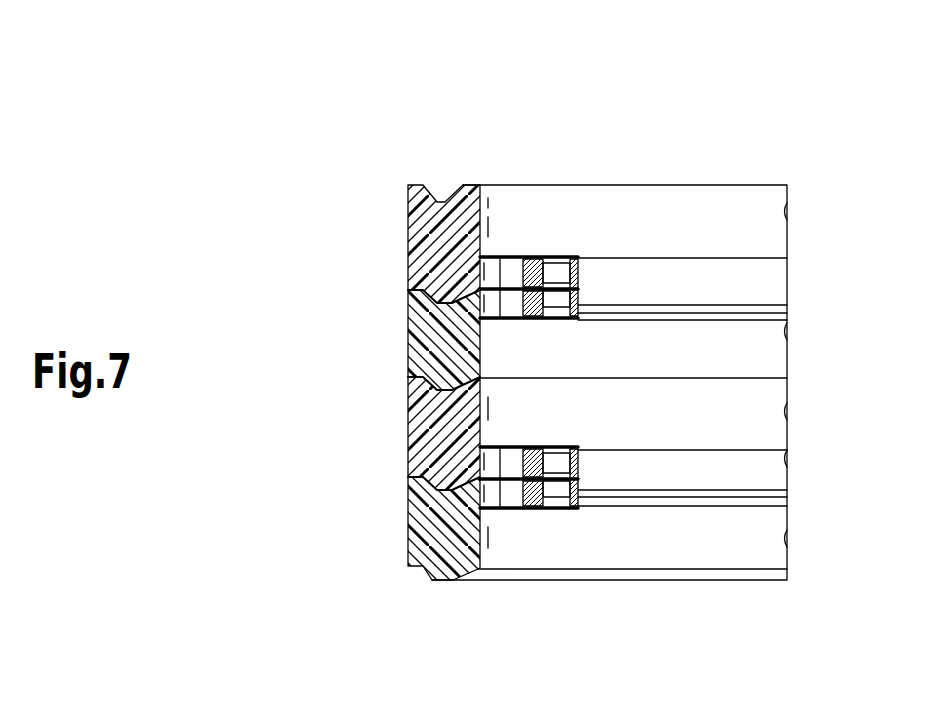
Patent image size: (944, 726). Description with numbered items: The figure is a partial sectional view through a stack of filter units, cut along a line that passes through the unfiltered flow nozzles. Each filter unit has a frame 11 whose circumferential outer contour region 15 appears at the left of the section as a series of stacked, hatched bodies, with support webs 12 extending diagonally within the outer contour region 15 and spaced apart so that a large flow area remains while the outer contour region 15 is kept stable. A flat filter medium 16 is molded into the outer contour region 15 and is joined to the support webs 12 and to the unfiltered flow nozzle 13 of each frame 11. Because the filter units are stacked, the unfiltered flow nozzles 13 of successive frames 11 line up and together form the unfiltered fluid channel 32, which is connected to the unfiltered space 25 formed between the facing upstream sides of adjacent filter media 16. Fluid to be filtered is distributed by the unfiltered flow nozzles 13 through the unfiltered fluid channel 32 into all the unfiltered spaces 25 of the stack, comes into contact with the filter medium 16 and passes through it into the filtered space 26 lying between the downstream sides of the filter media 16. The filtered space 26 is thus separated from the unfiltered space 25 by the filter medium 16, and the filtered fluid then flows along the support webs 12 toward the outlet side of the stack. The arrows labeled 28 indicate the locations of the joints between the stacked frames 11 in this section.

The frame 11 is at (420, 226).
The support webs 12 is at (535, 255).
The unfiltered flow nozzle 13 is at (576, 262).
The outer contour region 15 is at (398, 210).
The filter medium 16 is at (510, 255).
The unfiltered space 25 is at (765, 232).
The filtered space 26 is at (567, 255).
The joint 28 is at (438, 180).
The unfiltered fluid channel 32 is at (765, 281).